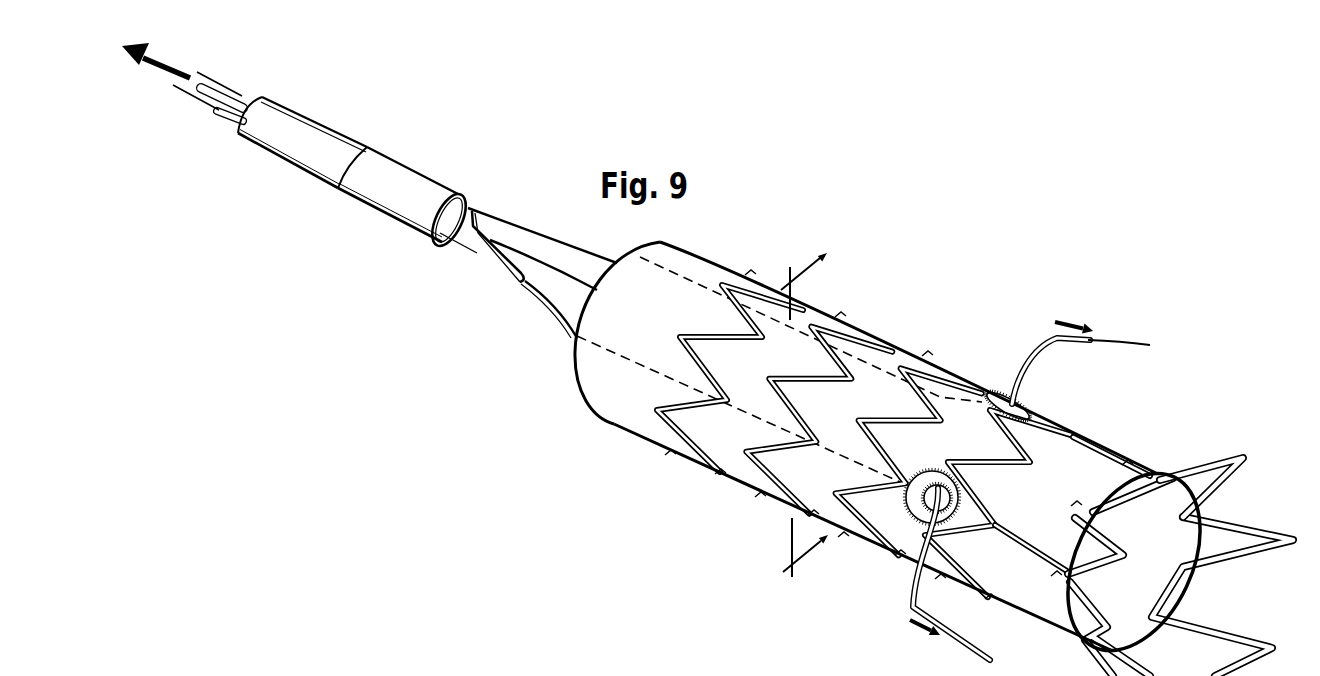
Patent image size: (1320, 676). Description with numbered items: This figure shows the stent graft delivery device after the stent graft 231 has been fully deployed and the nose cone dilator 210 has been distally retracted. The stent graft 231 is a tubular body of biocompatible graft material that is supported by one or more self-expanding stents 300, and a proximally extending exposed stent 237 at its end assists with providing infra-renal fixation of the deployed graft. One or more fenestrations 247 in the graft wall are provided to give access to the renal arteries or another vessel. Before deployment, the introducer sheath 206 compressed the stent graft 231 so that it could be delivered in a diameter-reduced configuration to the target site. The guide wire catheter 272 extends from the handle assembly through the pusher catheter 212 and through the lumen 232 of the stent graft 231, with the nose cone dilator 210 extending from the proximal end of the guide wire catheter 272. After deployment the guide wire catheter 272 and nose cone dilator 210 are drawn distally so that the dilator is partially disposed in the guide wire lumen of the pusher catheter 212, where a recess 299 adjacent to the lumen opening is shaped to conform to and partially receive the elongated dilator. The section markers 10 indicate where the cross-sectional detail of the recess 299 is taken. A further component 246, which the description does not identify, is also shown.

The guide wire catheter 272 is at (215, 92).
The pusher catheter 212 is at (300, 135).
The introducer sheath 206 is at (410, 172).
The nose cone dilator 210 is at (575, 253).
The recess 299 is at (477, 233).
The stent graft 231 is at (690, 258).
The lumen 232 is at (1155, 581).
The exposed stent 237 is at (1222, 458).
The self-expanding stents 300 is at (944, 362).
The fenestrations 247 is at (950, 508).
The release wire 246 is at (1130, 343).
The section line for FIG. 10 is at (802, 426).